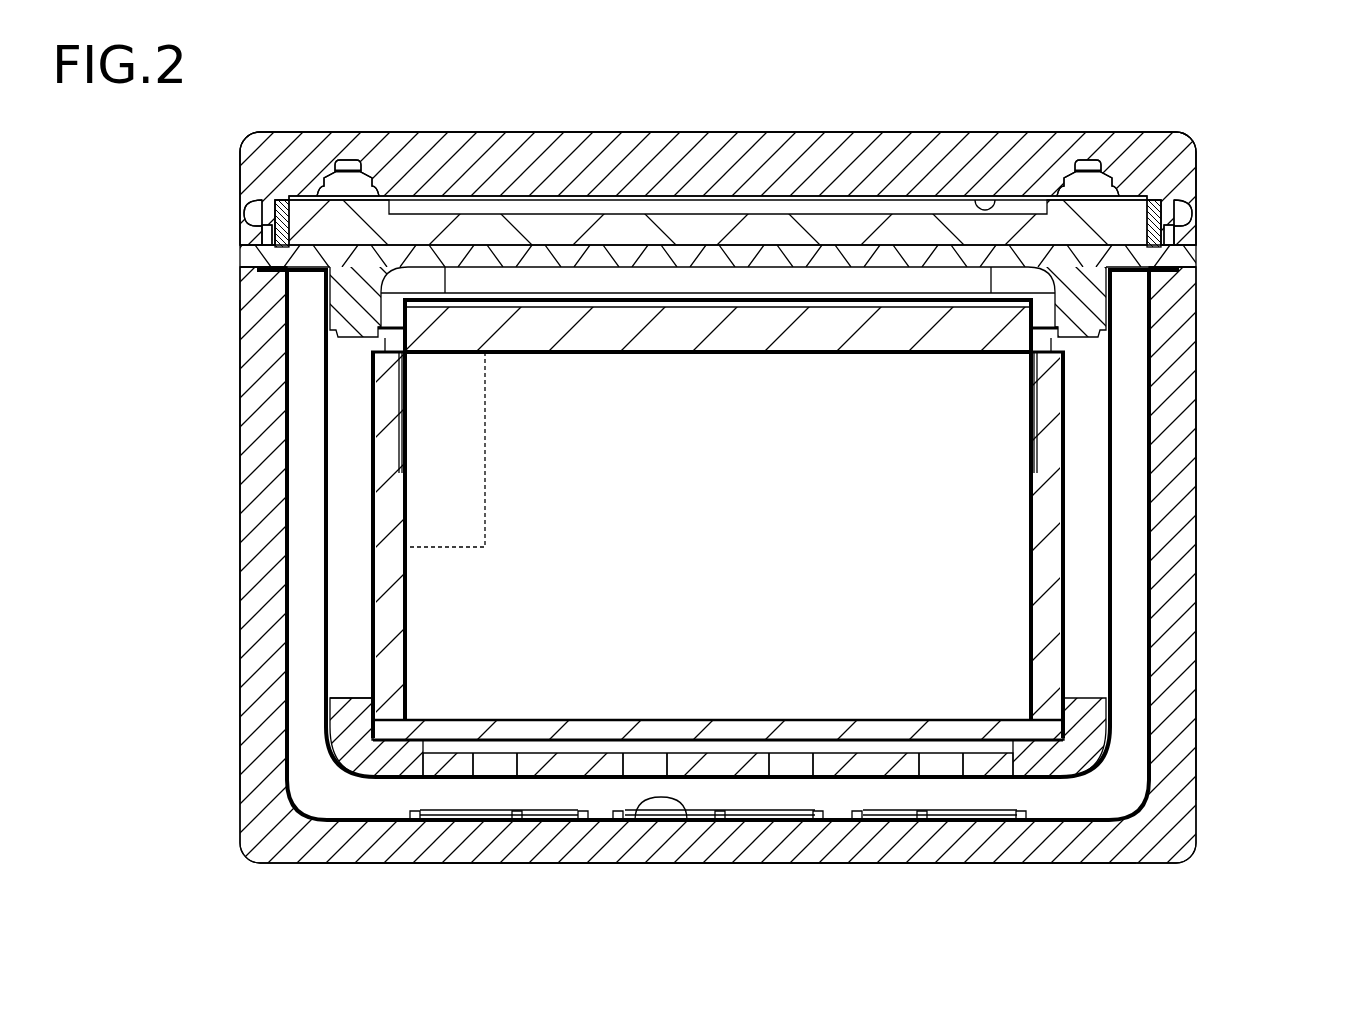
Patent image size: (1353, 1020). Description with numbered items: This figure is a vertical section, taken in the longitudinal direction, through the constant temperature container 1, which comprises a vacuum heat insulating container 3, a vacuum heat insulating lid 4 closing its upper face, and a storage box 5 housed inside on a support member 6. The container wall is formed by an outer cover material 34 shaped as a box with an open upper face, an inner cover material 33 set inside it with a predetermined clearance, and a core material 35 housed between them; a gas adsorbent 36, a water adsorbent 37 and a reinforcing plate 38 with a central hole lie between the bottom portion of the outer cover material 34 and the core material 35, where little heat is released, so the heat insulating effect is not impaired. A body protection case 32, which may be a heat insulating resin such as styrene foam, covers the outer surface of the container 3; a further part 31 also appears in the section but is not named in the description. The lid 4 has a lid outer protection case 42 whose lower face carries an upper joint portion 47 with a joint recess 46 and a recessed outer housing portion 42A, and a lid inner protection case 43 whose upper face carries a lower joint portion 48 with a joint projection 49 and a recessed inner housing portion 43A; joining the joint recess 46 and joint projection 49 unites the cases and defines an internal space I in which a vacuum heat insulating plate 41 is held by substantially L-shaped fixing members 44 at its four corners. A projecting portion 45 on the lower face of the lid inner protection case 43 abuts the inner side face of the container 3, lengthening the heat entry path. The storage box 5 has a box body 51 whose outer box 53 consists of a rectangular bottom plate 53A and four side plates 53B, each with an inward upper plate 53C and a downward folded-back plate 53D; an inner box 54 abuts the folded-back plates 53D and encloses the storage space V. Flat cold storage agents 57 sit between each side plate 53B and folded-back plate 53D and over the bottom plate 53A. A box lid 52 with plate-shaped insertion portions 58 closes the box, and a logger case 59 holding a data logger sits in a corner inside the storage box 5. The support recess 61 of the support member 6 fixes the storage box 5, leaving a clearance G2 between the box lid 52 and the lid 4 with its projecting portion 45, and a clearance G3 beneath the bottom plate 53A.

The constant temperature container 1 is at (744, 104).
The vacuum heat insulating container 3 is at (212, 356).
The vacuum heat insulating lid 4 is at (212, 178).
The storage box 5 is at (1080, 655).
The support member 6 is at (1087, 718).
The side wall 31 is at (265, 450).
The body protection case 32 is at (283, 487).
The inner cover material 33 is at (335, 615).
The outer cover material 34 is at (328, 660).
The core material 35 is at (295, 712).
The gas adsorbent 36 is at (395, 778).
The water adsorbent 37 is at (548, 778).
The reinforcing plate 38 is at (618, 815).
The vacuum heat insulating plate 41 is at (777, 230).
The lid outer protection case 42 is at (268, 156).
The outer housing portion 42A is at (992, 212).
The lid inner protection case 43 is at (350, 287).
The inner housing portion 43A is at (907, 238).
The fixing member 44 is at (285, 200).
The projecting portion 45 is at (320, 273).
The joint recess 46 is at (246, 205).
The upper joint portion 47 is at (250, 220).
The lower joint portion 48 is at (282, 232).
The joint projection 49 is at (262, 236).
The box body 51 is at (1078, 376).
The box lid 52 is at (1030, 318).
The outer box 53 is at (1066, 400).
The bottom plate 53A is at (1040, 740).
The side plate 53B is at (352, 625).
The upper plate 53C is at (343, 367).
The folded-back plate 53D is at (398, 500).
The inner box 54 is at (1034, 582).
The cold storage agent 57 is at (828, 323).
The insertion portion 58 is at (400, 467).
The logger case 59 is at (425, 512).
The support recess 61 is at (387, 718).
The clearance G2 is at (488, 280).
The clearance G3 is at (847, 748).
The storage space V is at (598, 479).
The internal space I is at (685, 210).